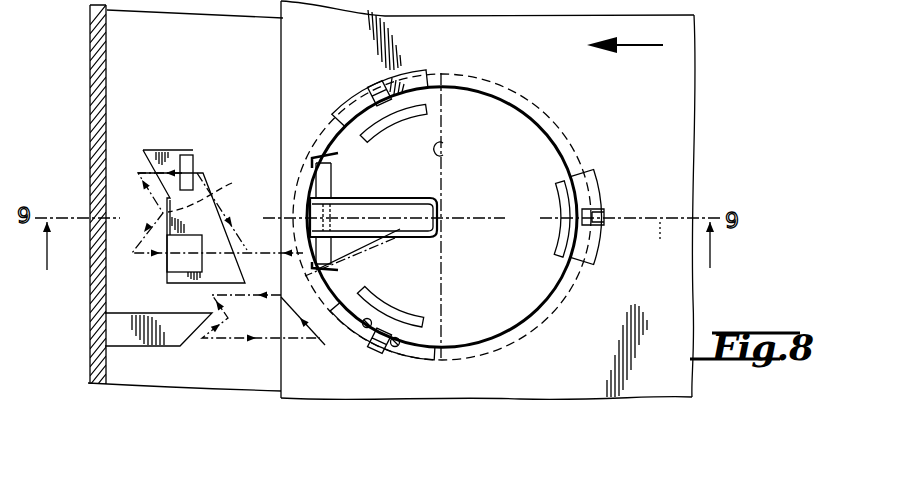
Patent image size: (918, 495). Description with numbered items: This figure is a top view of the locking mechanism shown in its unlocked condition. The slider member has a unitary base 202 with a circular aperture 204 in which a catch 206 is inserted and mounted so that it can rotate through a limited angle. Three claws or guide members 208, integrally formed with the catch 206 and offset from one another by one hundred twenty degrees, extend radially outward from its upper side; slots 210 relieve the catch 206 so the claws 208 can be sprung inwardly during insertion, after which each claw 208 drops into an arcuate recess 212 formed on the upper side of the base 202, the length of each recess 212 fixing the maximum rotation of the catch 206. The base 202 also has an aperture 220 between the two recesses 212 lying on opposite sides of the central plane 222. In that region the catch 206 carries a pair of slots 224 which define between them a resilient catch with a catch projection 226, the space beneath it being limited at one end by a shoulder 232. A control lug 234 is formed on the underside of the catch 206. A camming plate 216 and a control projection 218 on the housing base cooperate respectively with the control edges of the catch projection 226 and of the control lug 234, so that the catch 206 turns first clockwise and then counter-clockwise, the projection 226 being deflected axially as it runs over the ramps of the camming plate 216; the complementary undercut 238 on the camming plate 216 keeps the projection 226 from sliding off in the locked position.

The base 202 is at (682, 52).
The circular aperture 204 is at (530, 102).
The catch 206 is at (487, 84).
The claw 208 is at (378, 86).
The slot 210 is at (405, 116).
The arcuate recess 212 is at (425, 70).
The camming plate 216 is at (165, 147).
The control projection 218 is at (129, 338).
The aperture 220 is at (316, 172).
The central plane 222 is at (663, 243).
The slot 224 is at (437, 203).
The catch projection 226 is at (336, 205).
The shoulder 232 is at (447, 149).
The control lug 234 is at (424, 340).
The undercut 238 is at (216, 191).